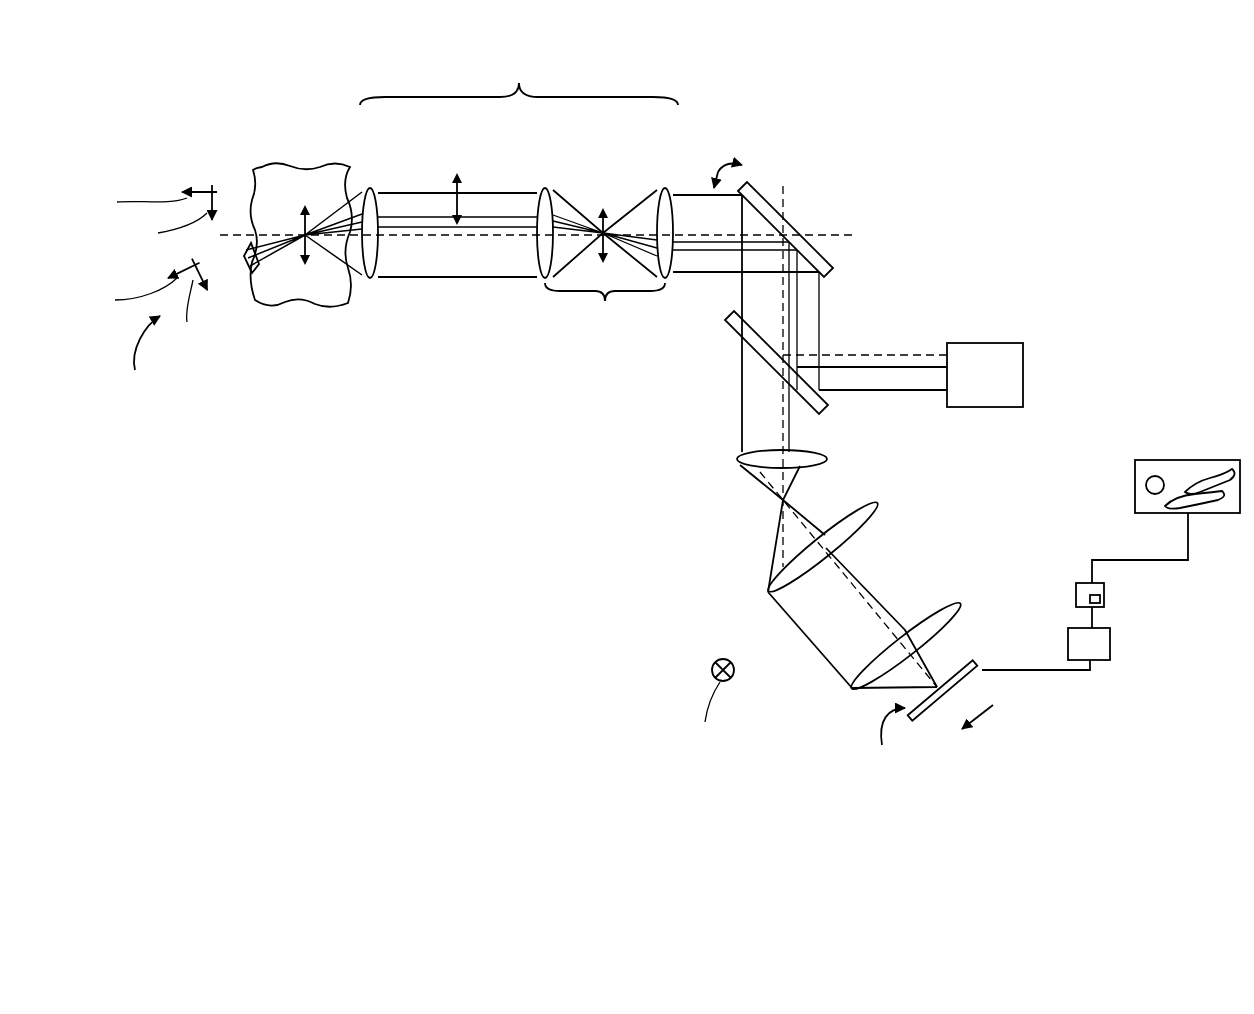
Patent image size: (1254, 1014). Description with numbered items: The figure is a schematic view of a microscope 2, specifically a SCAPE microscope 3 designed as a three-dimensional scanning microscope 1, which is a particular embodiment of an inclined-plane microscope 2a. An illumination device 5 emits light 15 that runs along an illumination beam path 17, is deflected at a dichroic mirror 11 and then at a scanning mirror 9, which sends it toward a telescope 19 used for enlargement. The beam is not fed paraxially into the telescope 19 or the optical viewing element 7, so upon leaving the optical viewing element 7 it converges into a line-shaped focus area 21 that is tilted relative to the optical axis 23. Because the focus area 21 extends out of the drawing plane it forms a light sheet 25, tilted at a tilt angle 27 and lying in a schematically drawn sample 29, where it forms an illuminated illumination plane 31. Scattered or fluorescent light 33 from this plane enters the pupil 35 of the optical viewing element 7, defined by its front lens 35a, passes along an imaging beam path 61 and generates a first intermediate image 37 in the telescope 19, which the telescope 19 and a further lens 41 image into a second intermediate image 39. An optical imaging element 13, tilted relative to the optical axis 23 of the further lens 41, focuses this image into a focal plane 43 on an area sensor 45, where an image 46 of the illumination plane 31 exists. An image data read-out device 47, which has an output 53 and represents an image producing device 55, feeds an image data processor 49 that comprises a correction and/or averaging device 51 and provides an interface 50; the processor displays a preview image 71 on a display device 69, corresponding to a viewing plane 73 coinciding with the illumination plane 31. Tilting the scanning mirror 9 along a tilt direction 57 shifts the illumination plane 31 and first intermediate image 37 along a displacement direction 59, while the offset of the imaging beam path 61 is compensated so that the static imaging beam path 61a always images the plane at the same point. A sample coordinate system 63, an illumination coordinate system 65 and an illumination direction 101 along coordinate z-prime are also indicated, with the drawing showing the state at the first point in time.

The 3D scanning microscope 1 is at (420, 613).
The microscope 2 is at (650, 441).
The inclined-plane microscope 2a is at (650, 441).
The SCAPE microscope 3 is at (420, 570).
The illumination device 5 is at (985, 408).
The optical viewing element 7 is at (519, 83).
The scanning mirror 9 is at (763, 188).
The dichroic mirror 11 is at (730, 333).
The optical imaging element 13 is at (880, 490).
The light 15 is at (903, 377).
The illumination beam path 17 is at (870, 367).
The telescope 19 is at (605, 301).
The focus area 21 is at (282, 253).
The optical axis 23 is at (238, 297).
The light sheet 25 is at (282, 253).
The tilt angle 27 is at (243, 265).
The sample 29 is at (282, 253).
The illumination plane 31 is at (282, 253).
The scattered or fluorescent light 33 is at (264, 240).
The pupil 35 is at (355, 185).
The front lens 35a is at (367, 275).
The first intermediate image 37 is at (575, 217).
The second intermediate image 39 is at (777, 500).
The further lens 41 is at (740, 462).
The focal plane 43 is at (932, 700).
The area sensor 45 is at (927, 727).
The image 46 is at (886, 740).
The image data read-out device 47 is at (1130, 661).
The image data processor 49 is at (1104, 598).
The interface 50 is at (1086, 583).
The correction and/or averaging device 51 is at (1097, 603).
The output 53 is at (1090, 628).
The image producing device 55 is at (1095, 660).
The tilt direction 57 is at (718, 170).
The displacement direction 59 is at (292, 200).
The imaging beam path 61 is at (463, 277).
The static imaging beam path 61a is at (738, 408).
The sample coordinate system 63 is at (190, 178).
The illumination coordinate system 65 is at (141, 359).
The display device 69 is at (1135, 460).
The preview image 71 is at (1170, 458).
The viewing plane 73 is at (262, 245).
The illumination direction 101 is at (192, 262).